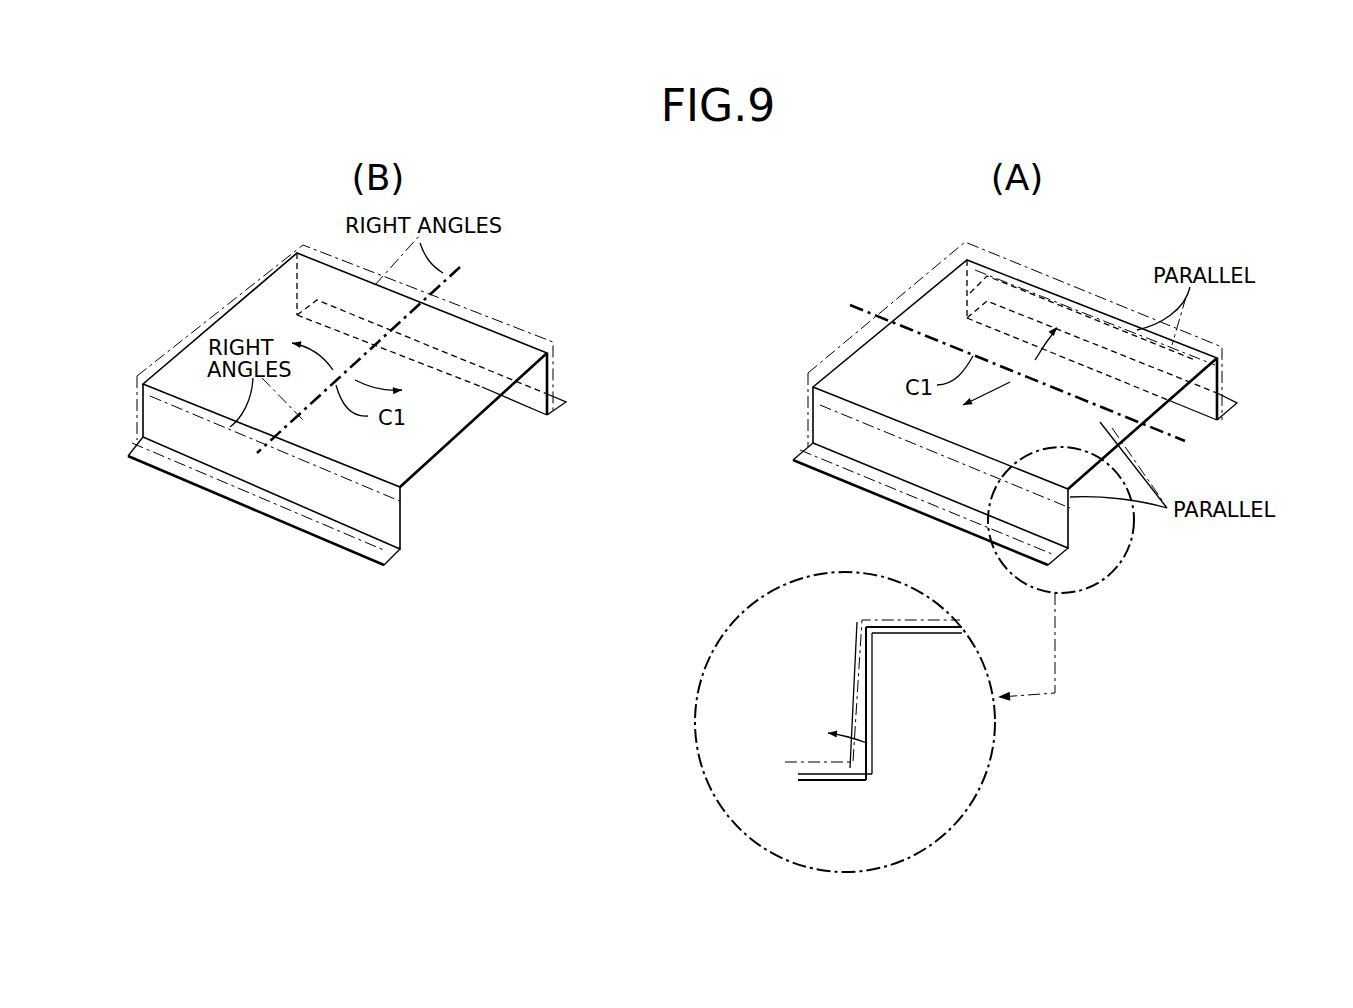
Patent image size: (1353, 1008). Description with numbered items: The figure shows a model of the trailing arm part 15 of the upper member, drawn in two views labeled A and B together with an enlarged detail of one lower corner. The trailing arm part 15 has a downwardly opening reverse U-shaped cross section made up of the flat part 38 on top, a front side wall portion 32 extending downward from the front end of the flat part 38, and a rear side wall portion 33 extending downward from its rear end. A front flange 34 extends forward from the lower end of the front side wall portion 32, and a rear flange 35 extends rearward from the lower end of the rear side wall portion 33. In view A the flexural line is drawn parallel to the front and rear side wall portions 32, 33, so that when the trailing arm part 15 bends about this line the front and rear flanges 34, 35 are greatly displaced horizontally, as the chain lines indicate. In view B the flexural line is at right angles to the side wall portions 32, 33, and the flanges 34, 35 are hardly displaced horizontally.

The trailing arm part 15 is at (510, 272).
The flat part 38 is at (242, 321).
The front side wall portion 32 is at (540, 373).
The front flange 34 is at (548, 414).
The rear side wall portion 33 is at (407, 513).
The rear flange 35 is at (392, 560).